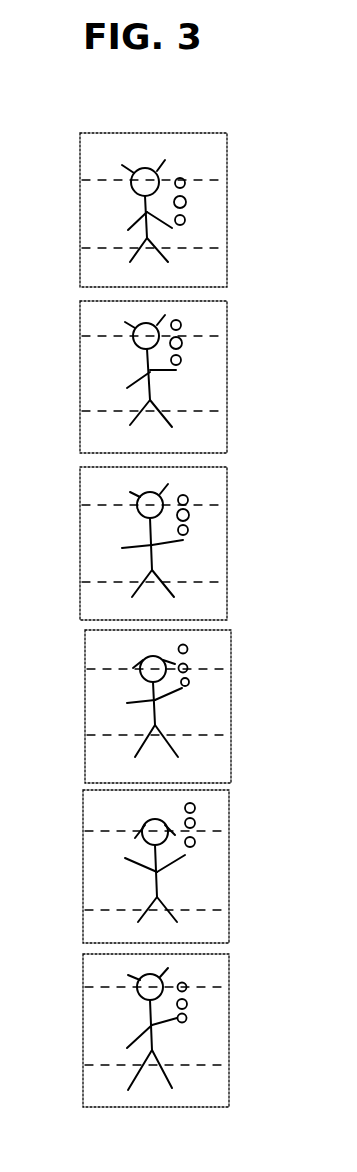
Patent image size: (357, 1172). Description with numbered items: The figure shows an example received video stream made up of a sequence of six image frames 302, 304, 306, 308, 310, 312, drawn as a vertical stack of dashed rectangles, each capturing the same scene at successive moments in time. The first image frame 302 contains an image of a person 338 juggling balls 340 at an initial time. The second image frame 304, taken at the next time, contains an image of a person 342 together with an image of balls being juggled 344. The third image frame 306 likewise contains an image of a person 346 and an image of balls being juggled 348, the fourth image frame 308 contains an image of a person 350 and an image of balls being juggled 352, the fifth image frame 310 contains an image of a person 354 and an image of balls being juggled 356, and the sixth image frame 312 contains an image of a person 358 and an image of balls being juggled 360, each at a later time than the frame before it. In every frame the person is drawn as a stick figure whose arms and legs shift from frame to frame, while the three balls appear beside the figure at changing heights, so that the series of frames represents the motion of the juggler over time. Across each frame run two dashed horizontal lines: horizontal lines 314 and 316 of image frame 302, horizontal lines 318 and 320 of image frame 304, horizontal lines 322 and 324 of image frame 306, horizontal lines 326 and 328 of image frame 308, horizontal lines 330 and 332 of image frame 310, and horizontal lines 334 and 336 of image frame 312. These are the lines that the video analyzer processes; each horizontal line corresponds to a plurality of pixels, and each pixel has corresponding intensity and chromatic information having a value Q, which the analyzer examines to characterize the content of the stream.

The image frame 302 is at (228, 158).
The image frame 304 is at (228, 318).
The image frame 306 is at (228, 488).
The image frame 308 is at (232, 655).
The image frame 310 is at (230, 818).
The image frame 312 is at (230, 973).
The horizontal line 314 is at (88, 180).
The horizontal line 316 is at (88, 248).
The horizontal line 318 is at (88, 336).
The horizontal line 320 is at (88, 411).
The horizontal line 322 is at (88, 505).
The horizontal line 324 is at (88, 582).
The horizontal line 326 is at (92, 669).
The horizontal line 328 is at (92, 735).
The horizontal line 330 is at (88, 831).
The horizontal line 332 is at (92, 910).
The horizontal line 334 is at (93, 987).
The horizontal line 336 is at (88, 1065).
The image of a person 338 is at (142, 168).
The balls 340 is at (186, 203).
The image of a person 342 is at (152, 387).
The image of balls being juggled 344 is at (183, 345).
The image of a person 346 is at (160, 578).
The image of balls being juggled 348 is at (190, 515).
The image of a person 350 is at (175, 748).
The image of balls being juggled 352 is at (190, 683).
The image of a person 354 is at (195, 843).
The image of balls being juggled 356 is at (175, 916).
The image of a person 358 is at (187, 1003).
The image of balls being juggled 360 is at (165, 1025).